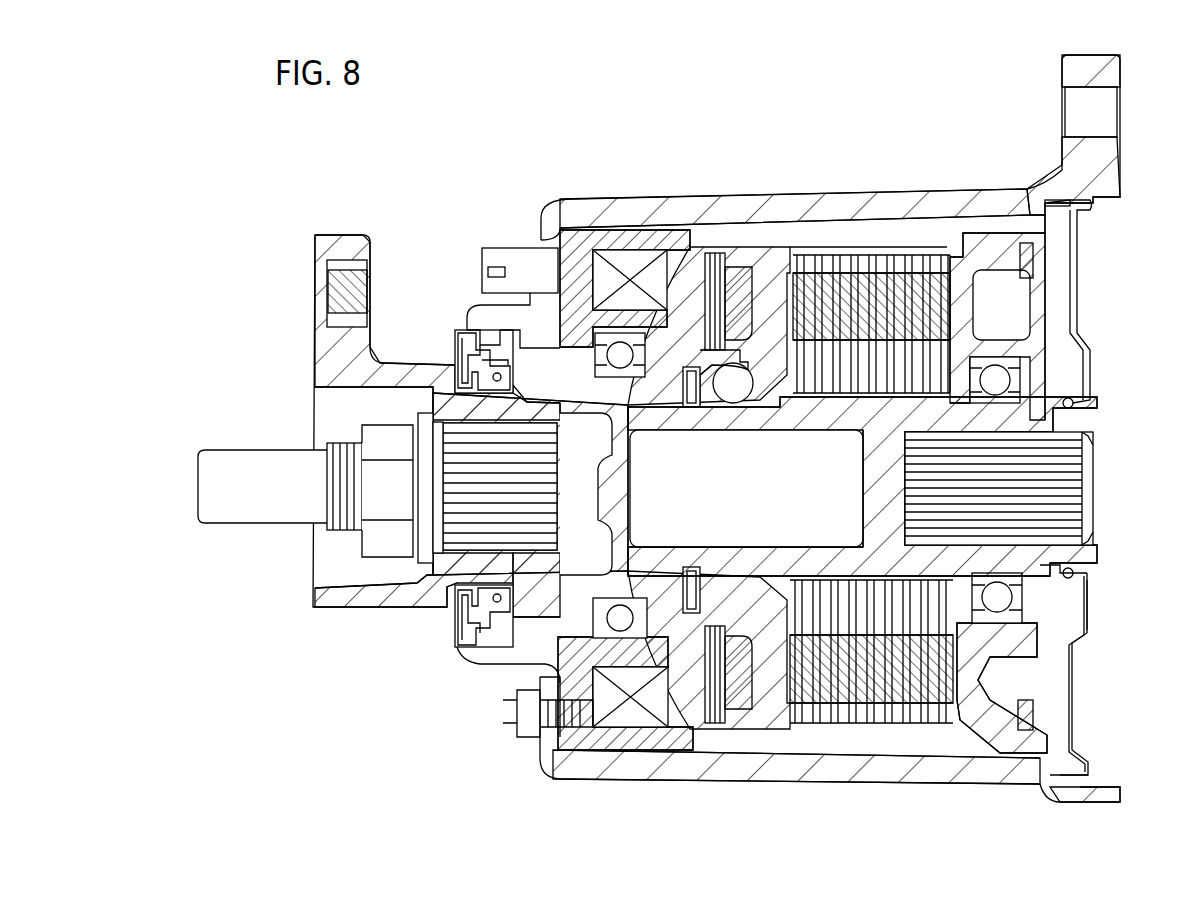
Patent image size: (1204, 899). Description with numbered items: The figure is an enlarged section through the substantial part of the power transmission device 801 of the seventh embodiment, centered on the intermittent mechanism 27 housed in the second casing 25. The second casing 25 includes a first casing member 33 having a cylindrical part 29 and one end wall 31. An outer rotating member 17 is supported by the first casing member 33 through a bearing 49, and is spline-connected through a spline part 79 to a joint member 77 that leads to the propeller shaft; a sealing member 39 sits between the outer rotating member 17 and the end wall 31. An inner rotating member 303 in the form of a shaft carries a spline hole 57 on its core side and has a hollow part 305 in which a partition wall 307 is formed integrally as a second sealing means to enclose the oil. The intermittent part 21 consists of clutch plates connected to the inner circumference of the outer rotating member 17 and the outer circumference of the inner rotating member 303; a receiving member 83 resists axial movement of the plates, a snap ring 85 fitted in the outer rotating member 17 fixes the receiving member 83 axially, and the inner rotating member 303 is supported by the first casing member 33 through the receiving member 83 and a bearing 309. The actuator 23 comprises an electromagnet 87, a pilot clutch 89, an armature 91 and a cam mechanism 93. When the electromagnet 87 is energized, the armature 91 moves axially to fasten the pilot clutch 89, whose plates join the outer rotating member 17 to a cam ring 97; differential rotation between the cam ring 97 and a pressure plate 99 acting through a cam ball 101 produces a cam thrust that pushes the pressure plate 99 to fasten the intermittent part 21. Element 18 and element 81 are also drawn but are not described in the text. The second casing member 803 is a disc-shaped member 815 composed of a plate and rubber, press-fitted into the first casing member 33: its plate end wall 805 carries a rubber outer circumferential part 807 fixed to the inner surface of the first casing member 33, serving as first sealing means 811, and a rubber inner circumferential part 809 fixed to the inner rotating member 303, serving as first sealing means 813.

The power transmission device 801 is at (758, 125).
The actuator 23 is at (822, 462).
The second casing 25 is at (980, 190).
The electromagnet 87 is at (627, 222).
The cam ball 101 is at (640, 228).
The pilot clutch 89 is at (680, 245).
The insulator 18 is at (738, 265).
The armature 91 is at (713, 253).
The cylindrical part 29 is at (782, 230).
The intermittent mechanism 27 is at (822, 188).
The outer rotating member 17 is at (860, 255).
The intermittent part 21 is at (905, 232).
The receiving member 83 is at (1000, 255).
The outer circumferential part 807 is at (1095, 210).
The second casing member 803 is at (1112, 304).
The inner circumferential part 809 is at (1075, 392).
The bearing 309 is at (995, 380).
The snap ring 85 is at (1032, 282).
The spline hole 57 is at (1065, 438).
The first sealing means 813 is at (1090, 572).
The disc-shaped member 815 is at (1090, 617).
The end wall 805 is at (1112, 673).
The first sealing means 811 is at (1090, 772).
The sealing member 39 is at (460, 330).
The joint member 77 is at (365, 340).
The bearing 49 is at (595, 350).
The spline part 79 is at (425, 420).
The rotor hub 81 is at (650, 408).
The cam ring 97 is at (690, 408).
The pressure plate 99 is at (740, 405).
The inner rotating member 303 is at (889, 617).
The cam mechanism 93 is at (732, 440).
The partition wall 307 is at (868, 515).
The end wall 31 is at (555, 770).
The first casing member 33 is at (738, 788).
The hollow part 305 is at (804, 580).